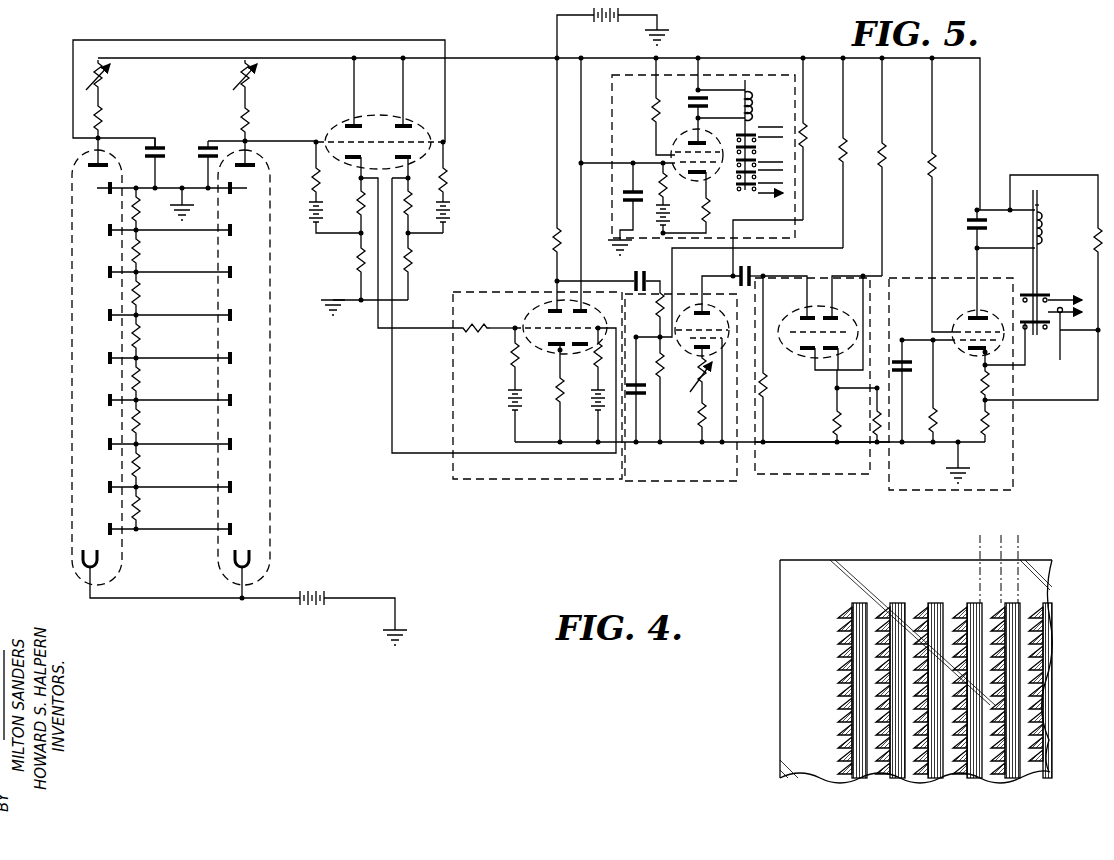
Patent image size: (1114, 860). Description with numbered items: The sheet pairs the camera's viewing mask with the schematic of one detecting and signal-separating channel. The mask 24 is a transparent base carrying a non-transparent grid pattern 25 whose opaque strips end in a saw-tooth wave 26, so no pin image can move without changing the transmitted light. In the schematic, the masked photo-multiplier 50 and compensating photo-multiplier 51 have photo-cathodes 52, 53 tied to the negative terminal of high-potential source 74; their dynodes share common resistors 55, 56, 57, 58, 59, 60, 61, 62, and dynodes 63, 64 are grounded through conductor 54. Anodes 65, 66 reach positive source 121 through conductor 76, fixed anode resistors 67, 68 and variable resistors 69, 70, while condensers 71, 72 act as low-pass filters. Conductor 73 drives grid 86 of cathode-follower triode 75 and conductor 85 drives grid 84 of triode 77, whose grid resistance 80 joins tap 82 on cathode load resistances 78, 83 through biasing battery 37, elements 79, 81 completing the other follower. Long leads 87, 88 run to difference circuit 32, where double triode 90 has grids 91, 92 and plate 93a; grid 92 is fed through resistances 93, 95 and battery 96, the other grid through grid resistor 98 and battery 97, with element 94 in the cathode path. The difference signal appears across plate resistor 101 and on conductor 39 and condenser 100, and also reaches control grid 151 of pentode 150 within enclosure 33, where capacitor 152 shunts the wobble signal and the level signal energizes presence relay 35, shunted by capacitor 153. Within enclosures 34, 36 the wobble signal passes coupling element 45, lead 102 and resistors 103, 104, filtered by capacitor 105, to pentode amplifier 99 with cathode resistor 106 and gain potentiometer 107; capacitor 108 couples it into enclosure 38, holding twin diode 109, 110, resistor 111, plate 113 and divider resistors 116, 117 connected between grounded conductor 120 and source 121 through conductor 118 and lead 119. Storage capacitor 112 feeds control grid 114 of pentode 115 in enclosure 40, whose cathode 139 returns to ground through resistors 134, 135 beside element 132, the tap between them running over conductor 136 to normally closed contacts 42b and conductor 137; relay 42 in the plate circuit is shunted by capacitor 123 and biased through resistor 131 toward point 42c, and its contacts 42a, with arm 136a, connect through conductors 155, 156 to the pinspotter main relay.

In FIG. 4, the mask 24 is at (805, 722).
In FIG. 4, the grid pattern 25 is at (933, 603).
In FIG. 4, the saw-tooth wave 26 is at (958, 628).
In FIG. 5, the difference circuit 32 is at (522, 480).
In FIG. 5, the relay amplifier circuit 33 is at (668, 75).
In FIG. 5, the amplifier stage 34 is at (642, 481).
In FIG. 5, the presence relay 35 is at (752, 105).
In FIG. 5, the amplifier stage 36 is at (748, 266).
In FIG. 5, the biassing battery 37 is at (322, 210).
In FIG. 5, the flip-flop stage 38 is at (818, 475).
In FIG. 5, the conductor 39 is at (615, 168).
In FIG. 5, the output stage 40 is at (1013, 470).
In FIG. 5, the wobble relay 42 is at (1040, 232).
In FIG. 5, the contacts 42a is at (1022, 298).
In FIG. 5, the normally closed contacts 42b is at (1040, 336).
In FIG. 5, the relay terminal 42c is at (1039, 211).
In FIG. 5, the coupling capacitor 45 is at (657, 272).
In FIG. 5, the photo-multiplier 50 is at (72, 375).
In FIG. 5, the compensating photo-multiplier 51 is at (250, 428).
In FIG. 5, the photo-cathode 52 is at (105, 558).
In FIG. 5, the photo-cathode 53 is at (255, 556).
In FIG. 5, the grounded conductor 54 is at (182, 190).
In FIG. 5, the common resistor 55 is at (140, 510).
In FIG. 5, the common resistor 56 is at (140, 467).
In FIG. 5, the common resistor 57 is at (140, 424).
In FIG. 5, the common resistor 58 is at (140, 380).
In FIG. 5, the common resistor 59 is at (140, 338).
In FIG. 5, the common resistor 60 is at (140, 295).
In FIG. 5, the common resistor 61 is at (140, 255).
In FIG. 5, the common resistor 62 is at (140, 215).
In FIG. 5, the dynode 63 is at (161, 199).
In FIG. 5, the dynode 64 is at (241, 199).
In FIG. 5, the anode 65 is at (77, 165).
In FIG. 5, the anode 66 is at (245, 161).
In FIG. 5, the fixed anode resistor 67 is at (106, 117).
In FIG. 5, the fixed anode resistor 68 is at (238, 117).
In FIG. 5, the variable resistor 69 is at (106, 72).
In FIG. 5, the variable resistor 70 is at (240, 70).
In FIG. 5, the condenser 71 is at (159, 150).
In FIG. 5, the condenser 72 is at (206, 148).
In FIG. 5, the conductor 73 is at (246, 40).
In FIG. 5, the high source of potential 74 is at (320, 594).
In FIG. 5, the triode 75 is at (430, 137).
In FIG. 5, the conductor 76 is at (305, 58).
In FIG. 5, the triode 77 is at (340, 122).
In FIG. 5, the cathode load resistance 78 is at (358, 262).
In FIG. 5, the resistor 79 is at (412, 262).
In FIG. 5, the grid resistance 80 is at (314, 177).
In FIG. 5, the resistor 81 is at (446, 175).
In FIG. 5, the tap 82 is at (316, 143).
In FIG. 5, the resistance 83 is at (358, 198).
In FIG. 5, the grid 84 is at (330, 140).
In FIG. 5, the conductor 85 is at (300, 140).
In FIG. 5, the grid 86 is at (408, 128).
In FIG. 5, the lead 87 is at (430, 453).
In FIG. 5, the lead 88 is at (435, 328).
In FIG. 5, the double triode 90 is at (555, 354).
In FIG. 5, the grid 91 is at (596, 318).
In FIG. 5, the grid 92 is at (542, 313).
In FIG. 5, the resistance 93 is at (491, 320).
In FIG. 5, the plate 93a is at (569, 344).
In FIG. 5, the resistor 94 is at (553, 385).
In FIG. 5, the resistance 95 is at (510, 355).
In FIG. 5, the biasing battery 96 is at (505, 398).
In FIG. 5, the biassing battery 97 is at (594, 410).
In FIG. 5, the grid resistor 98 is at (595, 360).
In FIG. 5, the pentode amplifier 99 is at (728, 335).
In FIG. 5, the condenser 100 is at (625, 280).
In FIG. 5, the plate resistor 101 is at (555, 240).
In FIG. 5, the lead 102 is at (660, 336).
In FIG. 5, the resistor 103 is at (655, 303).
In FIG. 5, the grid resistor 104 is at (663, 368).
In FIG. 5, the capacitor 105 is at (643, 395).
In FIG. 5, the fixed cathode resistor 106 is at (704, 424).
In FIG. 5, the gain control potentiometer 107 is at (711, 373).
In FIG. 5, the capacitor 108 is at (750, 278).
In FIG. 5, the diode 109 is at (800, 315).
In FIG. 5, the diode 110 is at (832, 312).
In FIG. 5, the resistor 111 is at (768, 380).
In FIG. 5, the signal storage capacitor 112 is at (906, 372).
In FIG. 5, the plate 113 is at (818, 332).
In FIG. 5, the control grid 114 is at (965, 322).
In FIG. 5, the pentode amplifier 115 is at (945, 352).
In FIG. 5, the resistor 116 is at (833, 418).
In FIG. 5, the resistor 117 is at (876, 442).
In FIG. 5, the conductor 118 is at (882, 270).
In FIG. 5, the resistor 119 is at (884, 158).
In FIG. 5, the grounded conductor 120 is at (778, 443).
In FIG. 5, the source of potential 121 is at (614, 24).
In FIG. 5, the capacitor 123 is at (970, 228).
In FIG. 5, the resistor 131 is at (1037, 250).
In FIG. 5, the resistor 132 is at (937, 432).
In FIG. 5, the resistor 134 is at (990, 438).
In FIG. 5, the resistor 135 is at (990, 398).
In FIG. 5, the conductor 136 is at (1083, 403).
In FIG. 5, the contact arm 136a is at (1079, 335).
In FIG. 5, the conductor 137 is at (1024, 362).
In FIG. 5, the cathode 139 is at (975, 355).
In FIG. 5, the pentode 150 is at (712, 180).
In FIG. 5, the control grid 151 is at (665, 185).
In FIG. 5, the capacitor 152 is at (636, 205).
In FIG. 5, the capacitor 153 is at (693, 98).
In FIG. 5, the conductor 155 is at (1082, 300).
In FIG. 5, the conductor 156 is at (1074, 359).